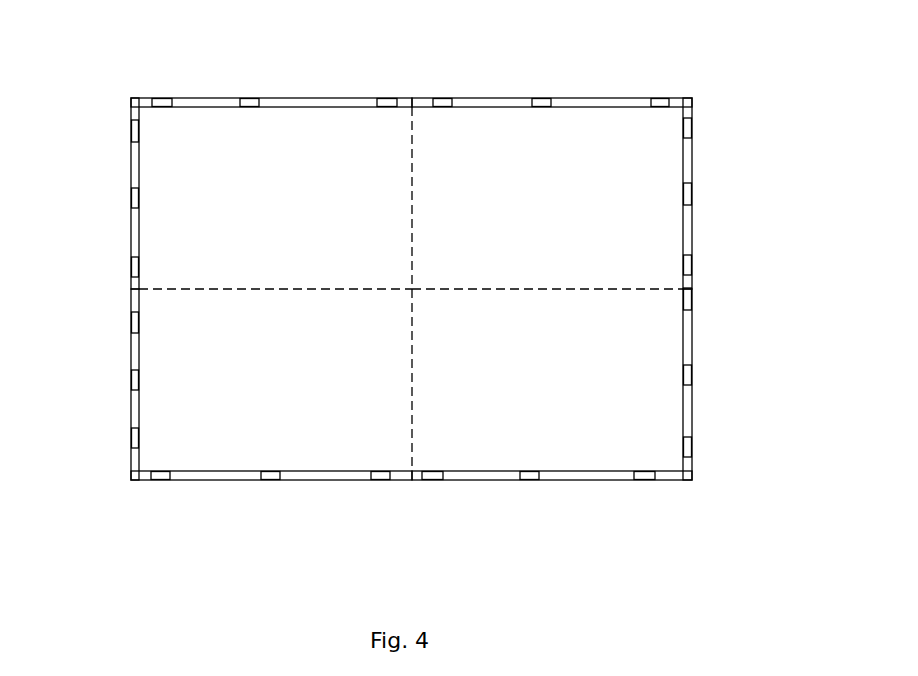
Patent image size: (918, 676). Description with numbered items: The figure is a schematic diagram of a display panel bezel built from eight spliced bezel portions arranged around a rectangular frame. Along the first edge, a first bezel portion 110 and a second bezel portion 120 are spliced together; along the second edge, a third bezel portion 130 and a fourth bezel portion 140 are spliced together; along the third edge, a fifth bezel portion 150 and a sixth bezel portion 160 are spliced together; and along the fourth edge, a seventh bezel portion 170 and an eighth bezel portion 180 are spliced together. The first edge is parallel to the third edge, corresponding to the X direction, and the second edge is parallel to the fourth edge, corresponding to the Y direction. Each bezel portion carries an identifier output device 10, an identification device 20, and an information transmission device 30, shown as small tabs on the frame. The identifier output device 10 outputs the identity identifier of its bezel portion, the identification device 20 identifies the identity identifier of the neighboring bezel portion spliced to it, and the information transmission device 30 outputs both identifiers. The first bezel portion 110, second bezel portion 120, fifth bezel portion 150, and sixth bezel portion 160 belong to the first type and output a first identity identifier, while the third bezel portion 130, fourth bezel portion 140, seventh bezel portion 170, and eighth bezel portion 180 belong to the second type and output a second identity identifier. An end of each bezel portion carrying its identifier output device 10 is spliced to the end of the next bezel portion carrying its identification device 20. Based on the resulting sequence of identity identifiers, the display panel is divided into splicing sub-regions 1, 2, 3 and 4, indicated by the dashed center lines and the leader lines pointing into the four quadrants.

The splicing sub-region 1 is at (240, 227).
The splicing sub-region 2 is at (613, 162).
The splicing sub-region 3 is at (582, 368).
The splicing sub-region 4 is at (208, 402).
The identifier output device 10 is at (157, 97).
The identification device 20 is at (386, 97).
The information transmission device 30 is at (250, 97).
The first bezel portion 110 is at (262, 97).
The second bezel portion 120 is at (565, 97).
The third bezel portion 130 is at (692, 168).
The fourth bezel portion 140 is at (692, 343).
The fifth bezel portion 150 is at (548, 481).
The sixth bezel portion 160 is at (233, 481).
The seventh bezel portion 170 is at (130, 352).
The eighth bezel portion 180 is at (130, 172).